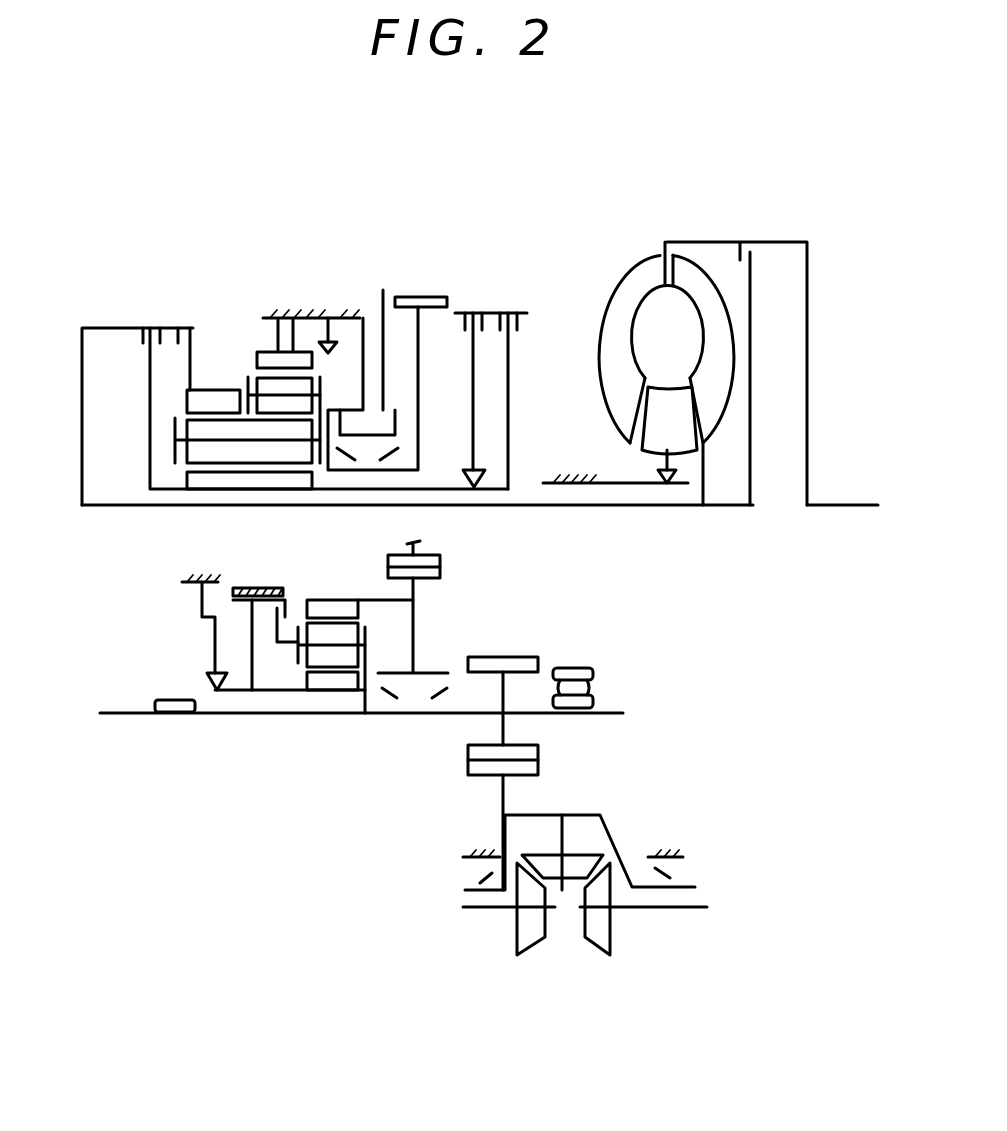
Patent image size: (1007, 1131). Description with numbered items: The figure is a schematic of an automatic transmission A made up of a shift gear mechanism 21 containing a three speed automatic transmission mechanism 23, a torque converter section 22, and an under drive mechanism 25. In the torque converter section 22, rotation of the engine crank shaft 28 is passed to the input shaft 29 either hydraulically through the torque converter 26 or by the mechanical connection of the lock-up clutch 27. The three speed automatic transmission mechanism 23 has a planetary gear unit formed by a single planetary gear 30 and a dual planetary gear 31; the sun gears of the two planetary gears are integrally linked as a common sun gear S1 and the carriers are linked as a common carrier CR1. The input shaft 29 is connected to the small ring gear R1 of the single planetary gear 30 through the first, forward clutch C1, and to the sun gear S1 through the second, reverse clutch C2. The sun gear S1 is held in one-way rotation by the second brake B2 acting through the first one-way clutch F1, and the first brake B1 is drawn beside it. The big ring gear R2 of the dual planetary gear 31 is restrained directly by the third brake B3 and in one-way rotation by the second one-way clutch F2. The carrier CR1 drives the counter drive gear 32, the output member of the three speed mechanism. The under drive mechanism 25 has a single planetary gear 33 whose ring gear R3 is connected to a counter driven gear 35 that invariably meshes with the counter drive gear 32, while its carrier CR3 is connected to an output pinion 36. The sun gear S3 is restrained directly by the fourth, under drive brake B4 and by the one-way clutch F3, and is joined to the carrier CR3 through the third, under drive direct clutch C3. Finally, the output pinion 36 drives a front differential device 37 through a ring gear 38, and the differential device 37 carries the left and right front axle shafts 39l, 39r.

The automatic transmission A is at (122, 213).
The shift gear mechanism 21 is at (115, 297).
The torque converter section 22 is at (708, 218).
The three speed automatic transmission mechanism 23 is at (294, 275).
The under drive mechanism 25 is at (125, 602).
The torque converter 26 is at (640, 287).
The lock-up clutch 27 is at (757, 258).
The engine crank shaft 28 is at (852, 500).
The input shaft 29 is at (658, 507).
The single planetary gear 30 is at (210, 345).
The dual planetary gear 31 is at (257, 340).
The counter drive gear 32 is at (427, 302).
The single planetary gear 33 is at (325, 588).
The counter driven gear 35 is at (430, 575).
The output pinion 36 is at (517, 662).
The front differential device 37 is at (616, 812).
The ring gear 38 is at (532, 767).
The left front axle shaft 39l is at (470, 908).
The right front axle shaft 39r is at (675, 908).
The first clutch C1 is at (190, 342).
The second clutch C2 is at (157, 319).
The third clutch C3 is at (278, 612).
The first brake B1 is at (510, 385).
The second brake B2 is at (491, 376).
The third brake B3 is at (311, 314).
The fourth brake B4 is at (259, 624).
The first one-way clutch F1 is at (466, 461).
The second one-way clutch F2 is at (332, 316).
The one-way clutch F3 is at (260, 643).
The ring gear R1 is at (213, 386).
The ring gear R2 is at (300, 360).
The ring gear R3 is at (342, 610).
The common sun gear S1 is at (230, 487).
The sun gear S3 is at (335, 690).
The common carrier CR1 is at (340, 390).
The carrier CR3 is at (367, 647).